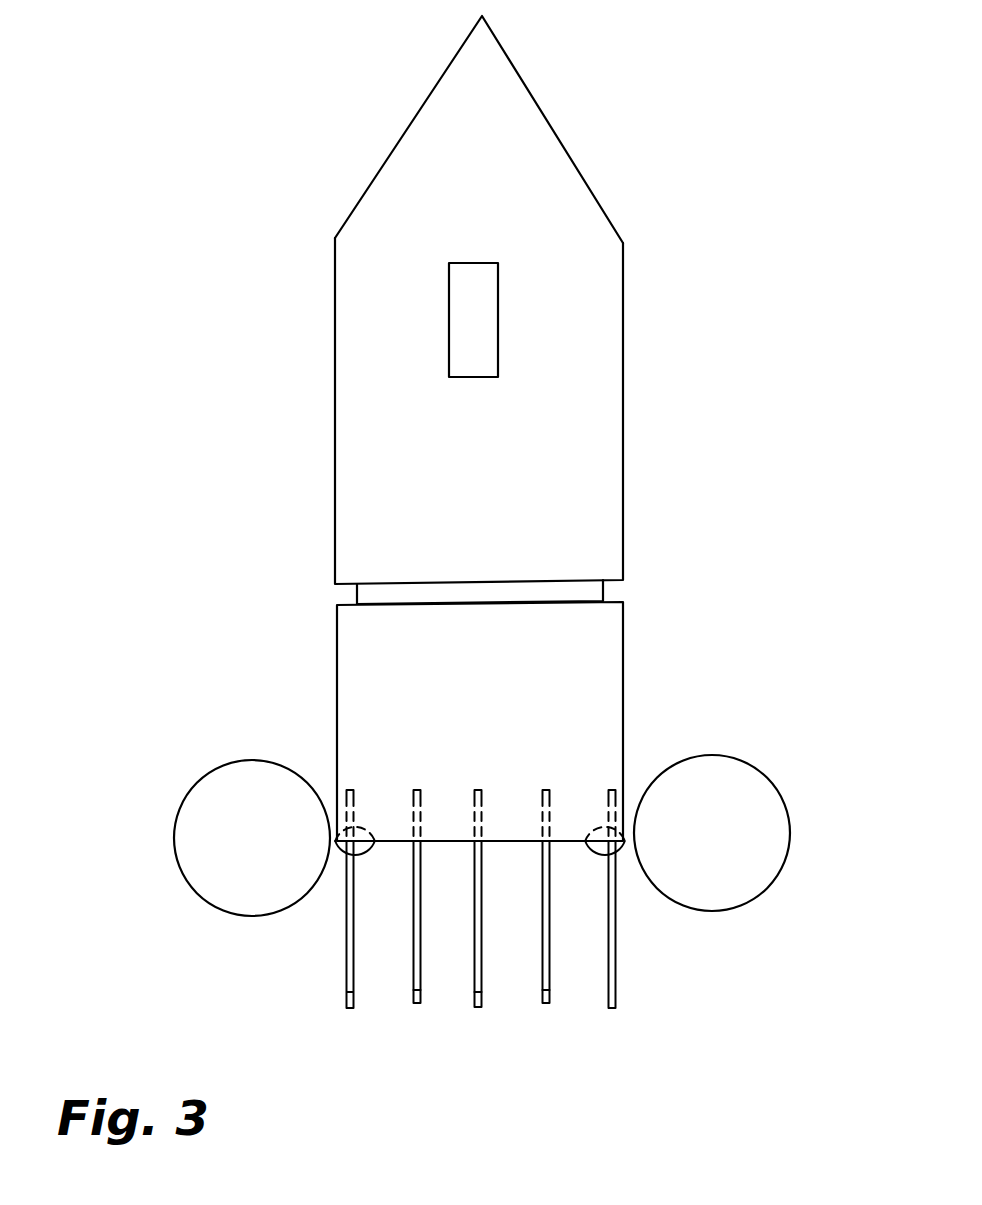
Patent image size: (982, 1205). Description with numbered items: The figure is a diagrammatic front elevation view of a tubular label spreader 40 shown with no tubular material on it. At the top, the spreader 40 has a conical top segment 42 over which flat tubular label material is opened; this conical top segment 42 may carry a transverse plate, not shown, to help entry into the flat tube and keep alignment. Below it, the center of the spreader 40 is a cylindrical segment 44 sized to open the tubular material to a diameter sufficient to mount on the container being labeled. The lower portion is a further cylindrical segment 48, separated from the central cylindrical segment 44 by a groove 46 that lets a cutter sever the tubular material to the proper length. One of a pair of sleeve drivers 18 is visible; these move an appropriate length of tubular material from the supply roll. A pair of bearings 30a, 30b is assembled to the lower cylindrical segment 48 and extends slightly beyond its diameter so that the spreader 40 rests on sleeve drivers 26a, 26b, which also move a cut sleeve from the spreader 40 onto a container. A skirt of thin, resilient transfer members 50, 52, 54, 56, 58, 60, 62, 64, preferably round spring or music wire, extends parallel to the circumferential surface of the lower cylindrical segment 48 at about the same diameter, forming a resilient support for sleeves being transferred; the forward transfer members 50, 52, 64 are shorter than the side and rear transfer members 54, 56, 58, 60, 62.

The spreader 40 is at (765, 306).
The conical top segment 42 is at (315, 23).
The cylindrical segment 44 is at (418, 411).
The groove 46 is at (343, 593).
The cylindrical segment 48 is at (315, 613).
The sleeve driver 18 is at (488, 318).
The sleeve driver 26a is at (200, 883).
The sleeve driver 26b is at (745, 886).
The bearing 30a is at (336, 857).
The bearing 30b is at (622, 854).
The transfer member 50 is at (474, 963).
The transfer member 52 is at (550, 962).
The transfer member 54 is at (613, 940).
The transfer member 56 is at (543, 1004).
The transfer member 58 is at (477, 1008).
The transfer member 60 is at (415, 1004).
The transfer member 62 is at (347, 958).
The transfer member 64 is at (413, 964).